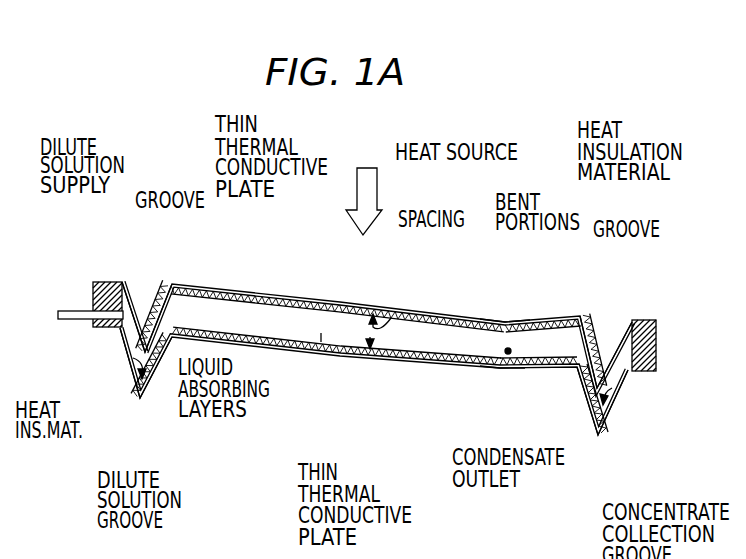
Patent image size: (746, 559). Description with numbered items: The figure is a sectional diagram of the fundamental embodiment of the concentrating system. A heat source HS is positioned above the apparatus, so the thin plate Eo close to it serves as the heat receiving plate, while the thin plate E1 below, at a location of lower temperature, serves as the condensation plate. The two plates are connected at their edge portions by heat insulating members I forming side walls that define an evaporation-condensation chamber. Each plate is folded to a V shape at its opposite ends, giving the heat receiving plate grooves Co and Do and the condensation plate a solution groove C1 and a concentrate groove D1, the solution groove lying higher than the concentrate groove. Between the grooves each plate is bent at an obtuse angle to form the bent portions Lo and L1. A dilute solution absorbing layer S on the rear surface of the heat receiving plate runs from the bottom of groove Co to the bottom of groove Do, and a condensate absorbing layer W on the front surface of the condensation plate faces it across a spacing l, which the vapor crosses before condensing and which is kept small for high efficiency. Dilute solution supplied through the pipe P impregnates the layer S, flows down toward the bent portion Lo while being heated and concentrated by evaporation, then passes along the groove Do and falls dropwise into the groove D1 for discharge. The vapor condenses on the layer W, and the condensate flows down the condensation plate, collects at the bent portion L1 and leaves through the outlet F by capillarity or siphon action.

The pipe P is at (73, 311).
The groove Co is at (148, 324).
The groove C1 is at (135, 367).
The thin plate Eo is at (219, 283).
The thin plate E1 is at (335, 352).
The dilute solution absorbing layer S is at (231, 357).
The condensate absorbing layer W is at (320, 340).
The heat source HS is at (364, 186).
The spacing l is at (392, 318).
The bent portion Lo is at (501, 321).
The bent portion L1 is at (541, 328).
The groove Do is at (607, 351).
The groove D1 is at (608, 412).
The outlet F is at (506, 353).
The heat insulating member I is at (33, 397).